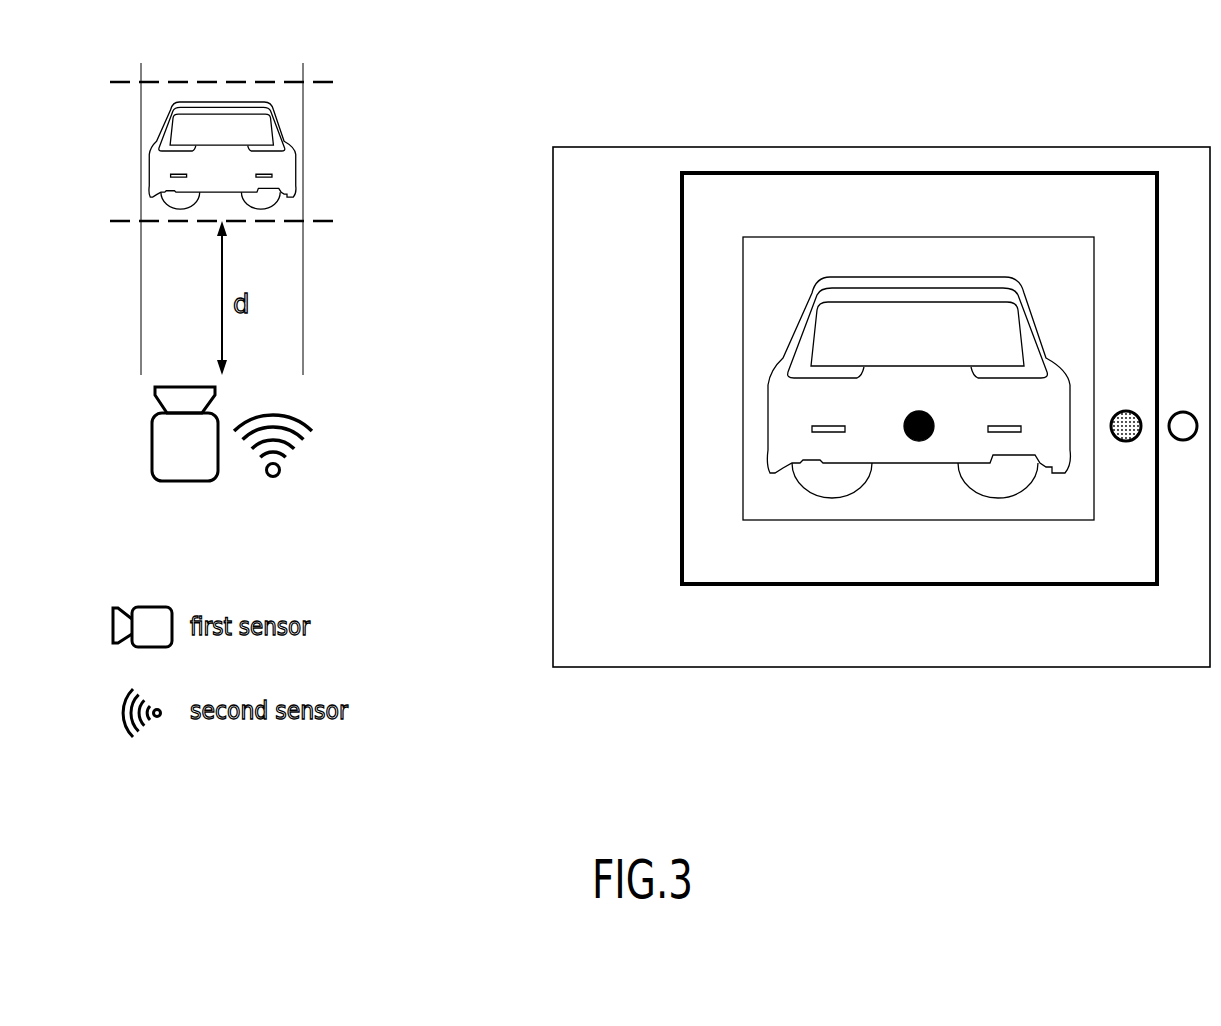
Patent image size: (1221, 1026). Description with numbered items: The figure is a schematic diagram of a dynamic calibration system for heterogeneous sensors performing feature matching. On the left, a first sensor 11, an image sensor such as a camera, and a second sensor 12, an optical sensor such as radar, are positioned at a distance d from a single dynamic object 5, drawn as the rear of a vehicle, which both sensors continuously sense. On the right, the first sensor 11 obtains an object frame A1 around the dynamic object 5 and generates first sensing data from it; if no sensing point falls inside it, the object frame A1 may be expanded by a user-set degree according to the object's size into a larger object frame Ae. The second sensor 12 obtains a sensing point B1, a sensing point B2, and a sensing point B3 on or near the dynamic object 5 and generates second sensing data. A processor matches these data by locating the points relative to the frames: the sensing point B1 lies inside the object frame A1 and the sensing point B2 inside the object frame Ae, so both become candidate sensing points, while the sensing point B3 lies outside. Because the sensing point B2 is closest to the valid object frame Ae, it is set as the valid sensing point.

The dynamic object 5 is at (219, 103).
The first sensor 11 is at (185, 481).
The second sensor 12 is at (281, 475).
The object frame Ae is at (732, 172).
The object frame A1 is at (827, 236).
The sensing point B1 is at (919, 441).
The sensing point B2 is at (1126, 441).
The sensing point B3 is at (1183, 441).